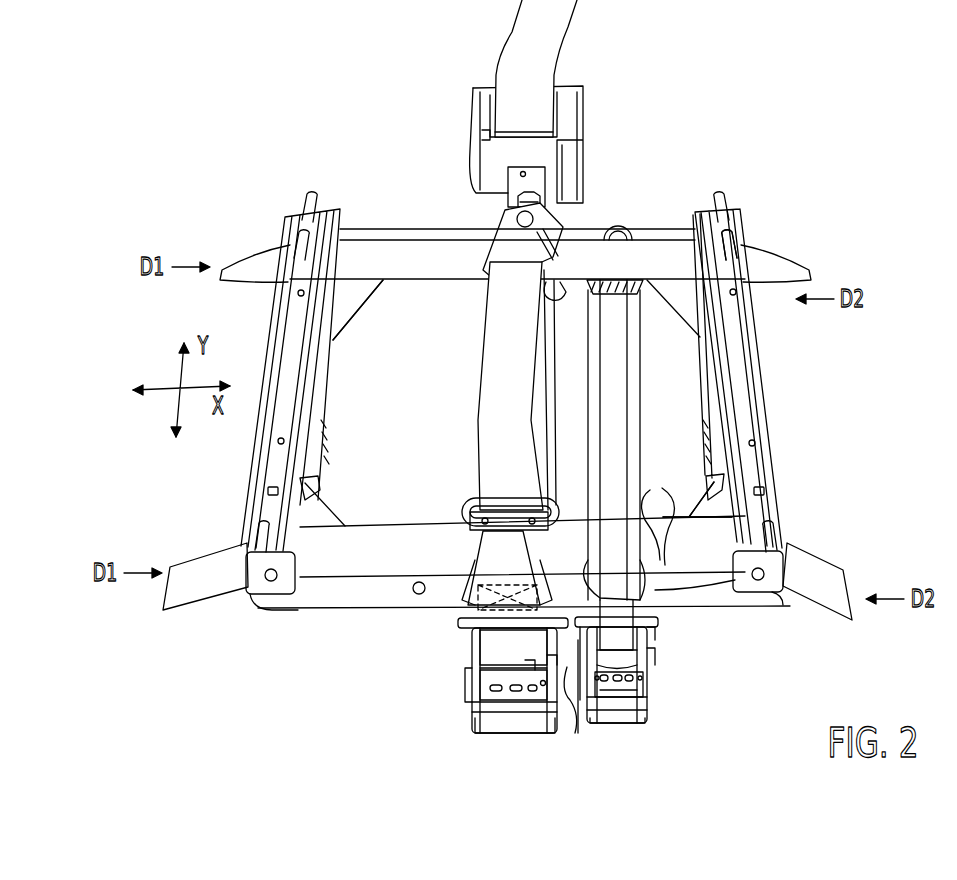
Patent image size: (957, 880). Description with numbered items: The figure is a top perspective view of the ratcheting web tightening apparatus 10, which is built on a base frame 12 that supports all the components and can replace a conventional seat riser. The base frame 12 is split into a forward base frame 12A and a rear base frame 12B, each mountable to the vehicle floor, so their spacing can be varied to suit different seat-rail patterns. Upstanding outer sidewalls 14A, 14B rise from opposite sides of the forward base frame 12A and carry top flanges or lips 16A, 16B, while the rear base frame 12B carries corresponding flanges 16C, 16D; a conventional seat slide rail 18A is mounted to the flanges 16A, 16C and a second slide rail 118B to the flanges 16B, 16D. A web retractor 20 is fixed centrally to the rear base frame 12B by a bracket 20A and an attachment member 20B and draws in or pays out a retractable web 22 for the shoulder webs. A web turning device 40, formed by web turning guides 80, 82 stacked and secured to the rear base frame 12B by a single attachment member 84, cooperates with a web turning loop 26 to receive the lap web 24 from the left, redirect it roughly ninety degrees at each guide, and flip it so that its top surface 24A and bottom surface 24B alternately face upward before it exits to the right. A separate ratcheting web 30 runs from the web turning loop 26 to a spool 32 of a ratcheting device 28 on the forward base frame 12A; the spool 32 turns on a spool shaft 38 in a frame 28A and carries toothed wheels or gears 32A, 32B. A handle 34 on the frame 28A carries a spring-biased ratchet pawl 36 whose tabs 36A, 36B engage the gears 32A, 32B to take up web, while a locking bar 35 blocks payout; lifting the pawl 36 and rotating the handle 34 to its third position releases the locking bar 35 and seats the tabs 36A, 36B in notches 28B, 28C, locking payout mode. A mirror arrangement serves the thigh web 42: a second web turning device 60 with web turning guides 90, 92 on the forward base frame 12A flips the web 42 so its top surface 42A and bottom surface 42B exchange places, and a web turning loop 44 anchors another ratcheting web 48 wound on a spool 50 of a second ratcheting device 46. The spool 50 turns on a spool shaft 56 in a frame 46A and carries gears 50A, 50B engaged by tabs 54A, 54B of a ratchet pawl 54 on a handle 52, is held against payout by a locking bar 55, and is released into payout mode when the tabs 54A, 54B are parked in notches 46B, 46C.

The ratcheting web tightening apparatus 10 is at (881, 102).
The base frame 12 is at (524, 655).
The forward base frame 12A is at (274, 629).
The rear base frame 12B is at (702, 202).
The outer sidewall 14A is at (239, 596).
The outer sidewall 14B is at (796, 600).
The top flange or lip 16A is at (240, 617).
The top flange or lip 16B is at (779, 620).
The flange or lip 16C is at (330, 183).
The flange or lip 16D is at (746, 188).
The vehicle seat guide or slide rail 18A is at (294, 380).
The right rail 118B is at (745, 380).
The web retractor 20 is at (546, 128).
The bracket 20A is at (524, 149).
The attachment member 20B is at (575, 174).
The retractable web 22 is at (559, 68).
The web 24 is at (518, 253).
The top surface of the web 24A is at (388, 351).
The bottom surface of the web 24B is at (674, 341).
The web turning loop 26 is at (500, 480).
The ratcheting device 28 is at (471, 678).
The frame 28A is at (522, 562).
The notch 28B is at (422, 663).
The notch 28C is at (534, 712).
The ratcheting web 30 is at (504, 570).
The spool 32 is at (478, 654).
The toothed wheel or gear 32A is at (480, 545).
The toothed wheel or gear 32B is at (553, 565).
The handle 34 is at (515, 754).
The locking bar 35 is at (564, 707).
The ratchet pawl 36 is at (486, 698).
The tab 36A is at (470, 683).
The tab 36B is at (476, 716).
The spool shaft 38 is at (410, 600).
The web turning device 40 is at (401, 310).
The web 42 is at (487, 574).
The top surface of the web 42A is at (375, 517).
The wing strap edge 42B is at (743, 445).
The web turning loop 44 is at (633, 310).
The ratcheting device 46 is at (660, 682).
The frame 46A is at (695, 588).
The notch 46B is at (576, 715).
The notch 46C is at (704, 648).
The ratcheting web 48 is at (645, 440).
The spool 50 is at (617, 618).
The toothed wheel or gear 50A is at (637, 576).
The toothed wheel or gear 50B is at (657, 646).
The handle 52 is at (619, 751).
The ratchet pawl 54 is at (647, 712).
The tab 54A is at (615, 716).
The tab 54B is at (662, 674).
The locking bar 55 is at (661, 705).
The spool shaft 56 is at (681, 624).
The web turning device 60 is at (635, 445).
The web turning guide 80 is at (601, 203).
The web turning guide 82 is at (561, 307).
The attachment member 84 is at (508, 237).
The web turning guide 90 is at (673, 516).
The web turning guide 92 is at (697, 526).